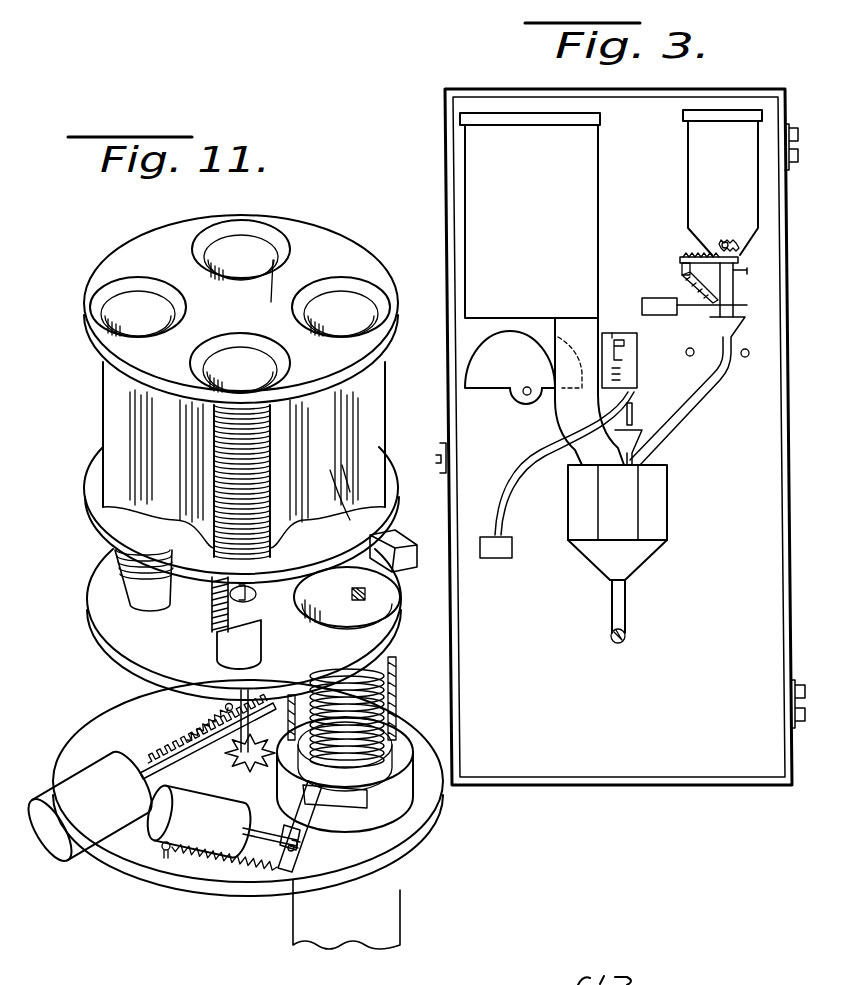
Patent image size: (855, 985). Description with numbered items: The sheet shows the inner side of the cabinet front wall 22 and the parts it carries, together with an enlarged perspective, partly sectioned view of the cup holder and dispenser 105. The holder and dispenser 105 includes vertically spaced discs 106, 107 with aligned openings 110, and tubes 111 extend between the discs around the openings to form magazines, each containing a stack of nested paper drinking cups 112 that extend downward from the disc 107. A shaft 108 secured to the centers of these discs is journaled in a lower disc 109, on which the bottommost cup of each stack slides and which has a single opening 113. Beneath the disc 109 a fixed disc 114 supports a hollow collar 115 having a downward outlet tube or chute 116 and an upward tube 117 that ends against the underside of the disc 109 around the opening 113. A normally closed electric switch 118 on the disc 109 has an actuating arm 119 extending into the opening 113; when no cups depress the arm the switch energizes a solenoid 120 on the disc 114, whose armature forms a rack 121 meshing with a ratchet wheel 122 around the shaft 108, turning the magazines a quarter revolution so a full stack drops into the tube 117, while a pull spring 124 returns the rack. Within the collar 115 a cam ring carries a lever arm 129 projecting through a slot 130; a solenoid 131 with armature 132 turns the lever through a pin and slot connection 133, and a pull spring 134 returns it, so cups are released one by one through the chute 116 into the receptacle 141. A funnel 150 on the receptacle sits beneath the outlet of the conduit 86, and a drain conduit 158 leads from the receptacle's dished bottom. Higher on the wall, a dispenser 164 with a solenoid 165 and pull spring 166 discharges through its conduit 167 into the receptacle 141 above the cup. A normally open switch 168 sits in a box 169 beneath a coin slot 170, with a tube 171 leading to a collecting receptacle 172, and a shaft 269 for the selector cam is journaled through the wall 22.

In FIG. 3, the cabinet front wall 22 is at (711, 765).
In FIG. 3, the conduit 86 is at (634, 406).
In FIG. 11, the holder and dispenser 105 is at (90, 447).
In FIG. 3, the holder and dispenser 105 is at (485, 223).
In FIG. 11, the disc 106 is at (235, 310).
In FIG. 11, the disc 107 is at (100, 530).
In FIG. 11, the shaft 108 is at (214, 610).
In FIG. 11, the lower disc 109 is at (96, 628).
In FIG. 11, the openings 110 is at (280, 306).
In FIG. 11, the tubes 111 is at (332, 495).
In FIG. 11, the paper drinking cups 112 is at (225, 640).
In FIG. 11, the opening 113 is at (385, 606).
In FIG. 11, the disc 114 is at (420, 830).
In FIG. 11, the hollow collar 115 is at (402, 788).
In FIG. 11, the outlet tube or chute 116 is at (398, 914).
In FIG. 3, the outlet tube or chute 116 is at (567, 405).
In FIG. 11, the tube 117 is at (400, 684).
In FIG. 11, the electric switch 118 is at (398, 545).
In FIG. 11, the actuating arm 119 is at (350, 596).
In FIG. 11, the solenoid 120 is at (92, 770).
In FIG. 11, the rack 121 is at (165, 768).
In FIG. 11, the ratchet wheel 122 is at (238, 768).
In FIG. 11, the pull spring 124 is at (193, 734).
In FIG. 11, the lever arm 129 is at (292, 872).
In FIG. 11, the slot 130 is at (218, 821).
In FIG. 11, the solenoid 131 is at (268, 776).
In FIG. 11, the armature 132 is at (297, 848).
In FIG. 11, the pin and slot connection 133 is at (303, 838).
In FIG. 11, the pull spring 134 is at (210, 862).
In FIG. 3, the receptacle 141 is at (655, 522).
In FIG. 3, the funnel 150 is at (640, 436).
In FIG. 3, the drain conduit 158 is at (624, 614).
In FIG. 3, the dispenser 164 is at (690, 168).
In FIG. 3, the solenoid 165 is at (658, 297).
In FIG. 3, the pull spring 166 is at (735, 284).
In FIG. 3, the conduit 167 is at (700, 400).
In FIG. 3, the electric switch 168 is at (640, 374).
In FIG. 3, the box 169 is at (637, 353).
In FIG. 3, the coin slot 170 is at (609, 334).
In FIG. 3, the tube or conduit 171 is at (508, 500).
In FIG. 3, the collecting receptacle 172 is at (513, 548).
In FIG. 3, the shaft 269 is at (518, 397).